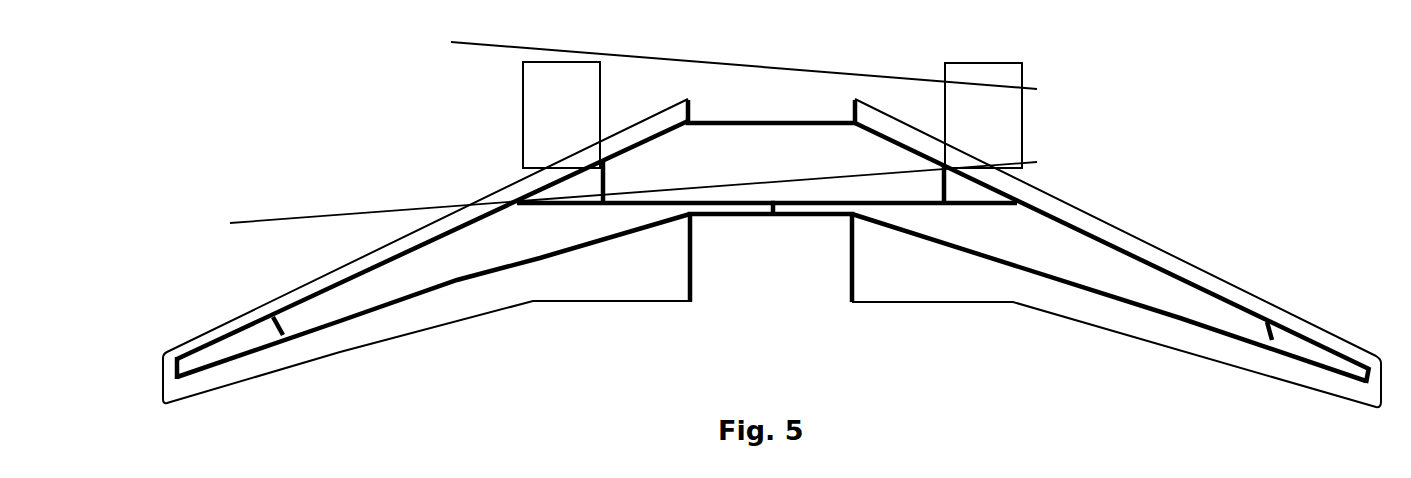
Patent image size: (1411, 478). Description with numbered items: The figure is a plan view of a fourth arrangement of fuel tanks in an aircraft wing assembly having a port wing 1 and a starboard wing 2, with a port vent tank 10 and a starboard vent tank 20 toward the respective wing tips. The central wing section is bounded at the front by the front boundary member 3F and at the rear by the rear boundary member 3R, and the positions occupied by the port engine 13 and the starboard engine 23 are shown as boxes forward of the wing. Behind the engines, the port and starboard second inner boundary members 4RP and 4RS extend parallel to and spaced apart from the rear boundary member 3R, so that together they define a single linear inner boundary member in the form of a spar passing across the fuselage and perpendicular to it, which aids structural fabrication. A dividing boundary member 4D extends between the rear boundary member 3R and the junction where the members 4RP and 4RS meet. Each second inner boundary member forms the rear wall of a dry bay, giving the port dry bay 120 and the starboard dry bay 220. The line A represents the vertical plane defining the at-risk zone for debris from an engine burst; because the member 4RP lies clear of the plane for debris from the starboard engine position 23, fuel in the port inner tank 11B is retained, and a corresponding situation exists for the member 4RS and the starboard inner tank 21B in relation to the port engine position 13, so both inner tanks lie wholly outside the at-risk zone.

The port wing 1 is at (340, 348).
The starboard wing 2 is at (1150, 343).
The port vent tank 10 is at (217, 345).
The starboard vent tank 20 is at (1283, 345).
The port inner tank 11B is at (442, 265).
The starboard inner tank 21B is at (1107, 275).
The port dry bay 120 is at (577, 207).
The starboard dry bay 220 is at (947, 178).
The position of port engine 13 is at (513, 88).
The position of starboard engine 23 is at (1012, 102).
The front boundary member 3F is at (713, 120).
The rear boundary member 3R is at (713, 218).
The port second inner boundary member 4RP is at (650, 207).
The starboard second inner boundary member 4RS is at (905, 207).
The dividing boundary member 4D is at (797, 216).
The line AA A is at (633, 176).